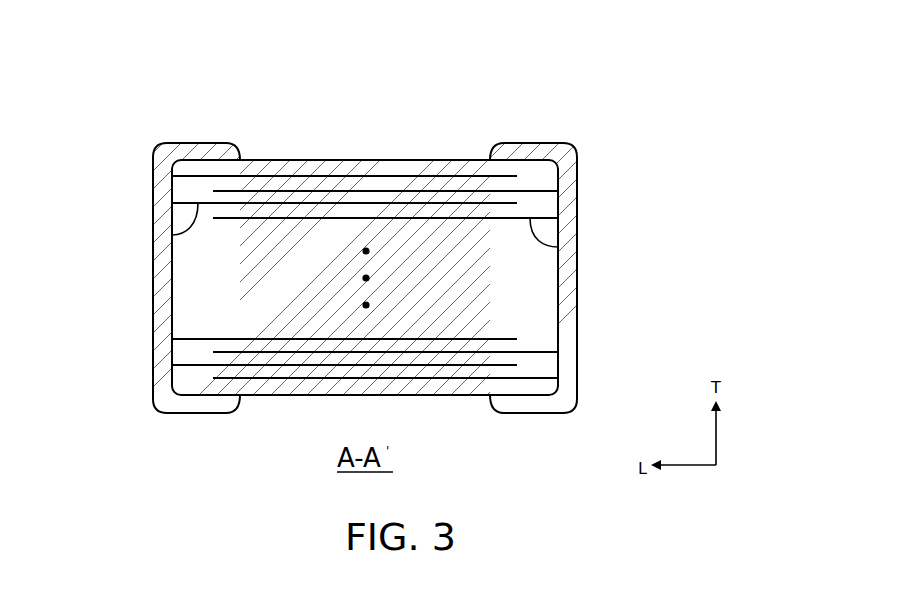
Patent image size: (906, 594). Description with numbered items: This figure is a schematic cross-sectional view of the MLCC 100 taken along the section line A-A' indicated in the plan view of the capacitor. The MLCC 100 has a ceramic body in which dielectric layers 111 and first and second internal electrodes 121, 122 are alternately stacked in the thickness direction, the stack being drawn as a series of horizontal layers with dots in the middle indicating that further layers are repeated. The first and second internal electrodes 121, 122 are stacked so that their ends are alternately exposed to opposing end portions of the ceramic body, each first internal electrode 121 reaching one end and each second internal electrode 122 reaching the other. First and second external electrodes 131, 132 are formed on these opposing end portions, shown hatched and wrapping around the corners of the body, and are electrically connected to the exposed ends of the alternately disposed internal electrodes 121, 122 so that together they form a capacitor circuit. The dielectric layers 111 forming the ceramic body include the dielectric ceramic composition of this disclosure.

The MLCC 100 is at (376, 226).
The dielectric layer 111 is at (548, 205).
The first internal electrode 121 is at (172, 232).
The second internal electrode 122 is at (558, 247).
The first external electrode 131 is at (197, 150).
The second external electrode 132 is at (528, 150).